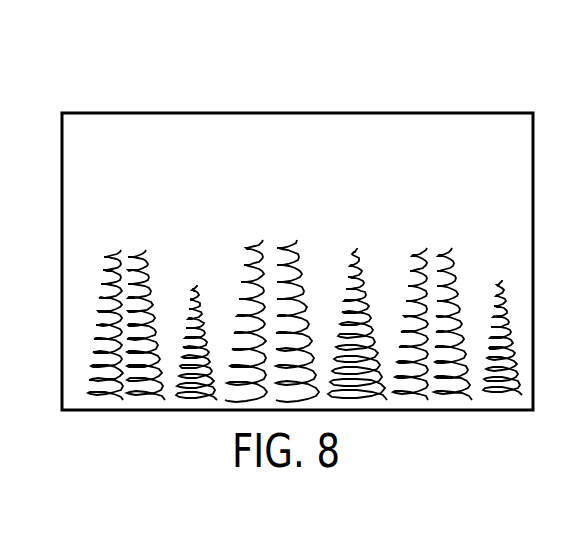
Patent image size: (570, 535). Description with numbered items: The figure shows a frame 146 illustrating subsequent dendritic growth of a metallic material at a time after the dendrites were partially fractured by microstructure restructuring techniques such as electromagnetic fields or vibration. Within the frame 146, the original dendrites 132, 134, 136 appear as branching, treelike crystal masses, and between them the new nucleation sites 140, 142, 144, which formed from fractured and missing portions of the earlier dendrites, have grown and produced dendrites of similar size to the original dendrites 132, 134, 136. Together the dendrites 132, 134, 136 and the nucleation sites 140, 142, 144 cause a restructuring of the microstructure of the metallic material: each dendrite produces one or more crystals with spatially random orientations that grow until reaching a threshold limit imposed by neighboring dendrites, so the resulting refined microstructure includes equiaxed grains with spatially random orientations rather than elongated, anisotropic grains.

The frame 146 is at (135, 113).
The dendrite 132 is at (127, 243).
The dendrite 134 is at (278, 232).
The dendrite 136 is at (441, 246).
The nucleation site 140 is at (192, 283).
The nucleation site 142 is at (360, 246).
The nucleation site 144 is at (507, 282).